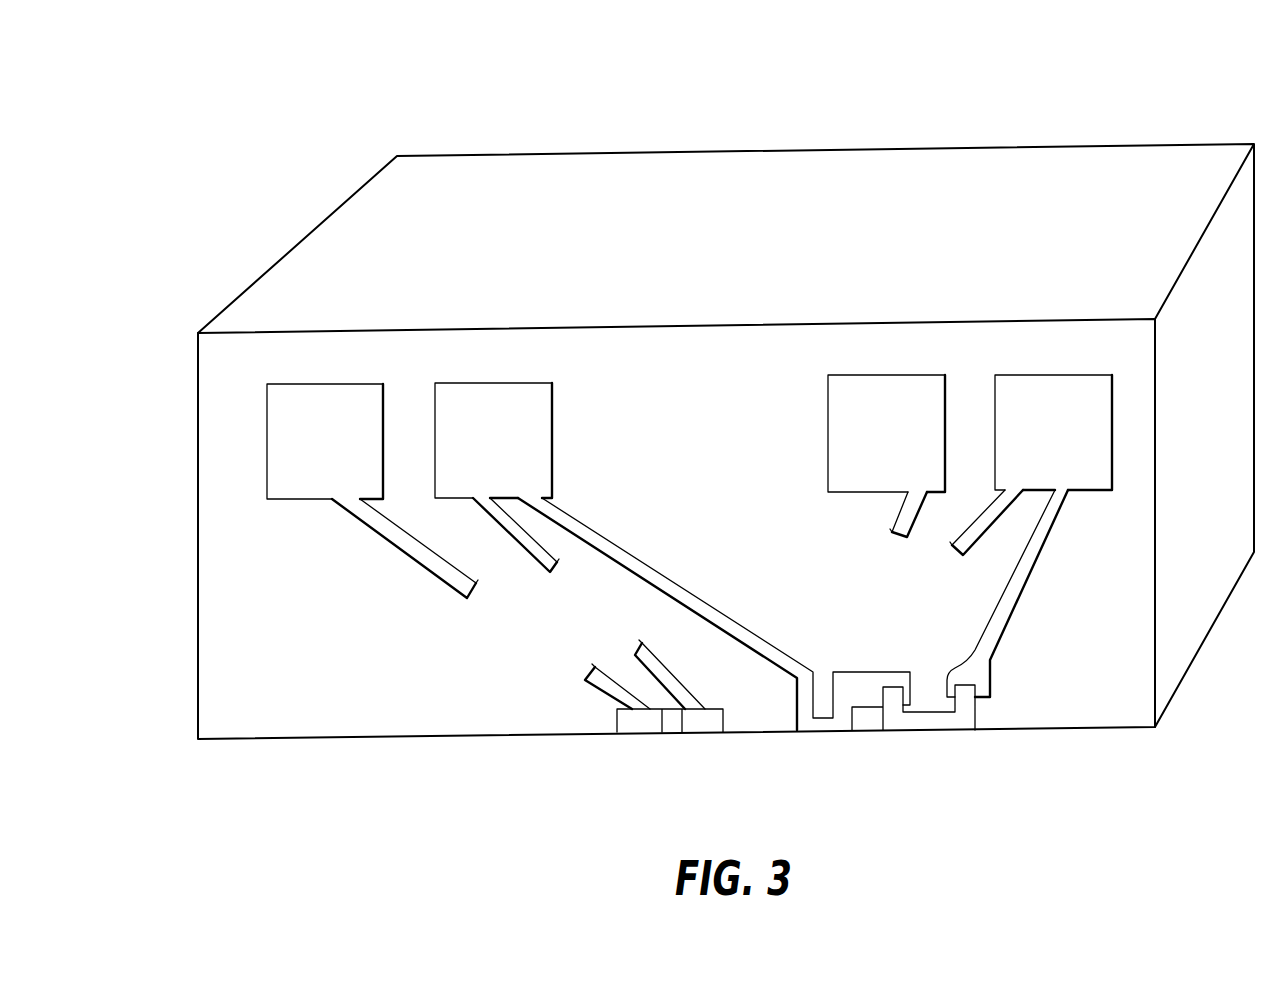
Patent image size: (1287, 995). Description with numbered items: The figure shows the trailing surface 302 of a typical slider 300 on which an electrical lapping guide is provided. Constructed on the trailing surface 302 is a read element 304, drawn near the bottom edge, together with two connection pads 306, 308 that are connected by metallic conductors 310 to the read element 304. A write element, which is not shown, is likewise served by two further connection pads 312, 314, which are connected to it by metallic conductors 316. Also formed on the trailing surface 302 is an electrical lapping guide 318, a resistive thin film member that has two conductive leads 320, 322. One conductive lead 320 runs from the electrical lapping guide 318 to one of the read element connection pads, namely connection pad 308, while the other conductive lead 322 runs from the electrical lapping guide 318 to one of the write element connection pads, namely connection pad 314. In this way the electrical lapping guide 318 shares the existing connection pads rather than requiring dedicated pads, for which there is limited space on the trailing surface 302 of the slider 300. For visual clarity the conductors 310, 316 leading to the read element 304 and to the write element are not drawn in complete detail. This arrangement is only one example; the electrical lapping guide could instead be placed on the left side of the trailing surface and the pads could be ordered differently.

The slider 300 is at (885, 117).
The trailing surface 302 is at (402, 727).
The read element 304 is at (676, 733).
The connection pad 306 is at (293, 495).
The connection pad 308 is at (550, 467).
The metallic conductors 310 is at (542, 560).
The connection pad 312 is at (838, 458).
The connection pad 314 is at (1093, 482).
The metallic conductors 316 is at (952, 547).
The electrical lapping guide 318 is at (797, 750).
The conductive lead 320 is at (670, 585).
The conductive lead 322 is at (1023, 582).